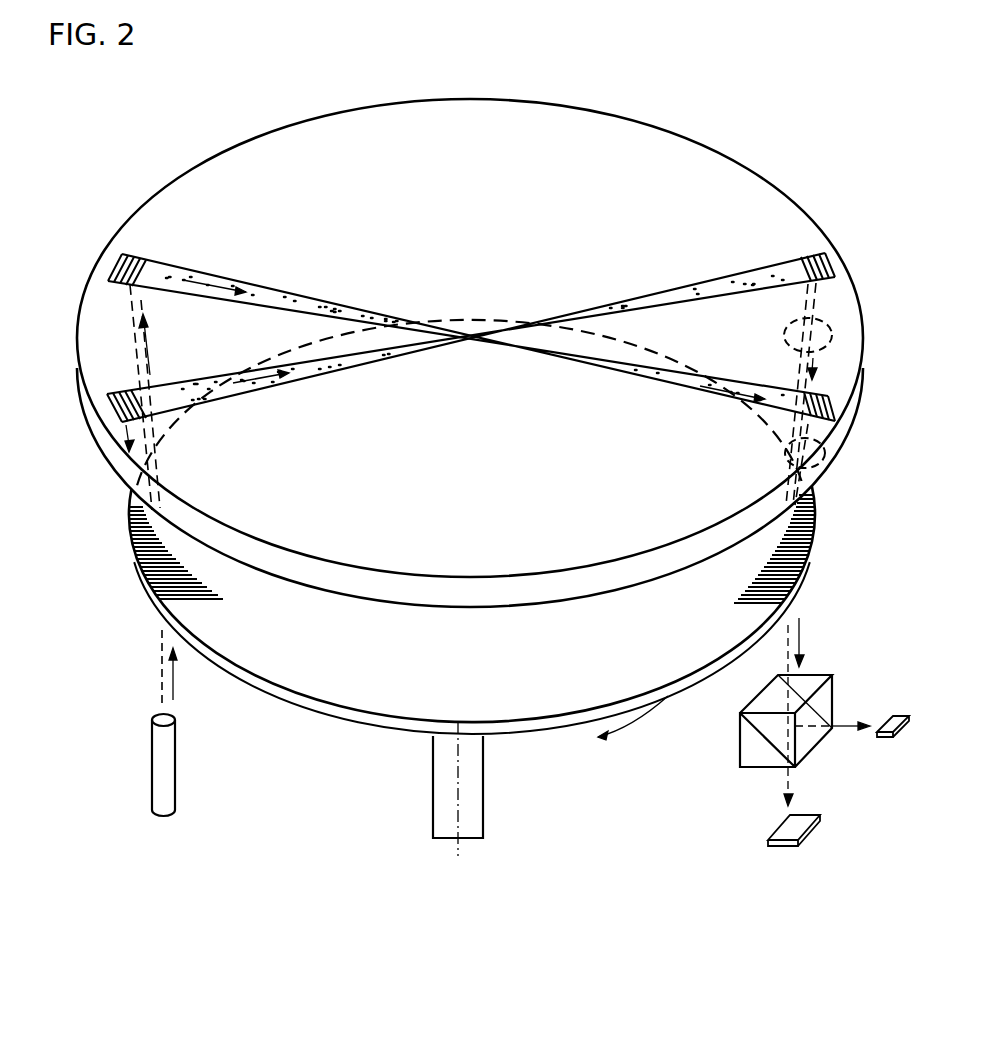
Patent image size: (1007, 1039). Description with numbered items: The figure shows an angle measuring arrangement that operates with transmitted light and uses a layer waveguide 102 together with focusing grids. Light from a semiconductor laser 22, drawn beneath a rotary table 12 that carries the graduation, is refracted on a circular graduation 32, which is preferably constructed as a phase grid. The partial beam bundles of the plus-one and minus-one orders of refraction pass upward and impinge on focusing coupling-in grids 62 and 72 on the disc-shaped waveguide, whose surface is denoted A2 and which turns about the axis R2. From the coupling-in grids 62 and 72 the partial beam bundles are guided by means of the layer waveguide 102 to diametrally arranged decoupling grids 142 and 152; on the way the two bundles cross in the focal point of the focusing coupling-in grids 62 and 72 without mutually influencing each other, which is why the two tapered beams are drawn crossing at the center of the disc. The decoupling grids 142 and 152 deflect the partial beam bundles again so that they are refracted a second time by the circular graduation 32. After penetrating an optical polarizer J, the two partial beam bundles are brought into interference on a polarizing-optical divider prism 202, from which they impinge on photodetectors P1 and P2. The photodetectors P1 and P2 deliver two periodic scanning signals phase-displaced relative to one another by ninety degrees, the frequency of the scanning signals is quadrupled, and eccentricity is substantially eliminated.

The rotary table / base disc 12 is at (392, 737).
The semiconductor laser 22 is at (165, 772).
The circular graduation 32 is at (150, 588).
The focusing coupling-in grid 62 is at (112, 268).
The focusing coupling-in grid 72 is at (110, 413).
The layer waveguide 102 is at (468, 560).
The decoupling grid 142 is at (830, 410).
The decoupling grid 152 is at (820, 264).
The polarizing-optical divider prism 202 is at (758, 742).
The axis of rotation R2 is at (458, 800).
The disc surface A2 is at (462, 504).
The photodetector P1 is at (780, 846).
The photodetector P2 is at (895, 742).
The optical polarizer J is at (832, 330).